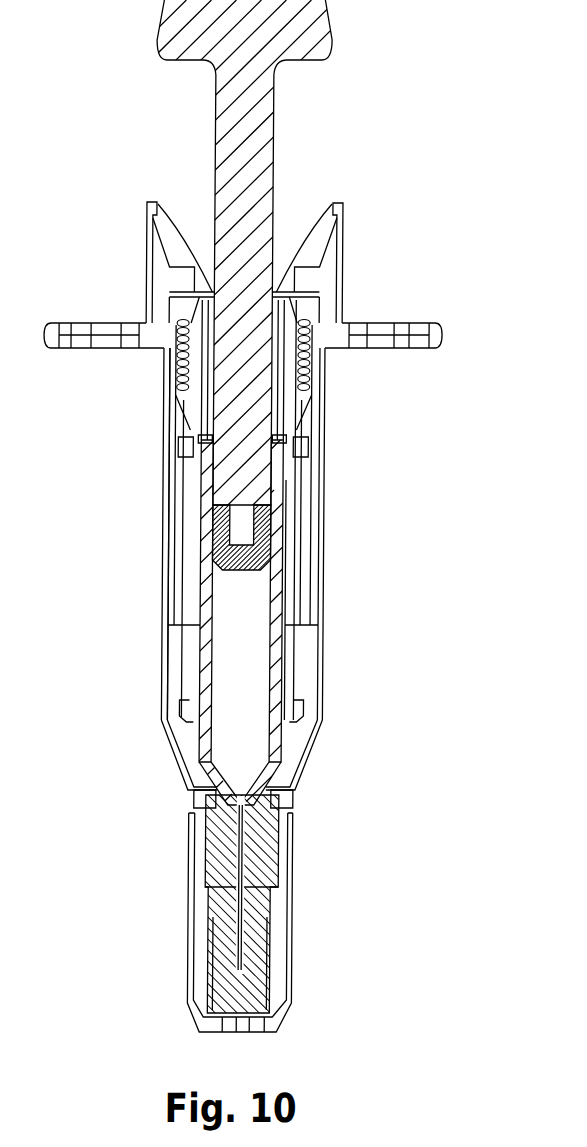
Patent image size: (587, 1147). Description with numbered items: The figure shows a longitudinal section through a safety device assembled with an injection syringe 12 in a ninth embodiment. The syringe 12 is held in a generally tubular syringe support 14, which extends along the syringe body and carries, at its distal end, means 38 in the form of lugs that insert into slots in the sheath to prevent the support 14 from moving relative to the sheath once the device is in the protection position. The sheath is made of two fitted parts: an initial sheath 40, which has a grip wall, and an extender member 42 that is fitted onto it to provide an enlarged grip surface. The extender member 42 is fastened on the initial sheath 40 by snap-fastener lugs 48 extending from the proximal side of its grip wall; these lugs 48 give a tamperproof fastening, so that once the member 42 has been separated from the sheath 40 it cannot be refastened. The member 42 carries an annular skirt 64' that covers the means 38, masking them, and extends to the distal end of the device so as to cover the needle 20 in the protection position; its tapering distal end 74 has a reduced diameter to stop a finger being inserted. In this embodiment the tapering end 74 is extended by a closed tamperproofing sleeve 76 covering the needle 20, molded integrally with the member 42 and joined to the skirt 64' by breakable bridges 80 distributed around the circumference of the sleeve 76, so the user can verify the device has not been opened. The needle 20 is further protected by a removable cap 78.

The injection syringe 12 is at (282, 445).
The syringe support 14 is at (299, 657).
The needle 20 is at (242, 935).
The means for preventing the support from moving relative to the sheath 38 is at (297, 710).
The initial sheath 40 is at (316, 502).
The extender member 42 is at (146, 392).
The snap-fastener lugs 48 is at (94, 325).
The annular skirt 64' is at (120, 534).
The tapering distal end 74 is at (177, 740).
The tamperproofing sleeve 76 is at (298, 917).
The removable cap 78 is at (218, 853).
The breakable bridges 80 is at (297, 798).